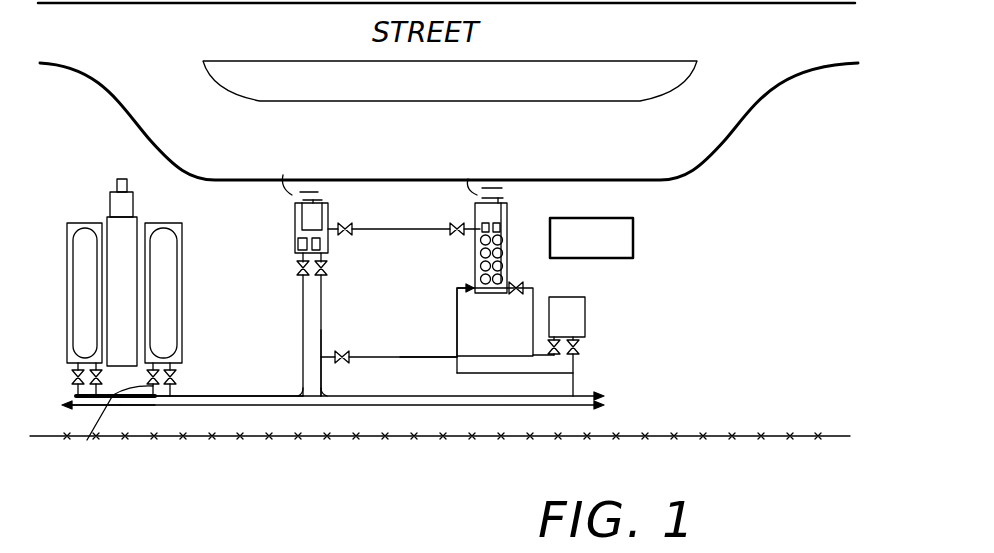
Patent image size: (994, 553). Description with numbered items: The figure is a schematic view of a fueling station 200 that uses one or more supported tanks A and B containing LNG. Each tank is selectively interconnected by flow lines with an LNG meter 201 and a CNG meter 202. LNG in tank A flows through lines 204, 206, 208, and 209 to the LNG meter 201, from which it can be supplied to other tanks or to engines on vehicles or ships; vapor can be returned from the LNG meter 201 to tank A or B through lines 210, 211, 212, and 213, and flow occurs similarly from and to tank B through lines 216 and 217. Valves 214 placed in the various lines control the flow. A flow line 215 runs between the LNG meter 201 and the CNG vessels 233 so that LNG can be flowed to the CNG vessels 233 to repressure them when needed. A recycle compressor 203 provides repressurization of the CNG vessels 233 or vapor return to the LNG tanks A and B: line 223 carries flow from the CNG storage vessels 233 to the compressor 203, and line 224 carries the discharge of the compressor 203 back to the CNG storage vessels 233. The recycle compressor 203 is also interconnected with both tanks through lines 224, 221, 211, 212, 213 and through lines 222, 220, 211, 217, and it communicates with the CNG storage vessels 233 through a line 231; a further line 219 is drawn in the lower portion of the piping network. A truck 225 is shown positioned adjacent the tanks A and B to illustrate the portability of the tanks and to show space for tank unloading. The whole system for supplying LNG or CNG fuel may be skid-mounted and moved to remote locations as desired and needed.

The fueling station 200 is at (363, 410).
The LNG meter 201 is at (330, 207).
The CNG meter 202 is at (507, 213).
The recycle compressor 203 is at (585, 300).
The line 204 is at (84, 405).
The line 206 is at (142, 405).
The line 208 is at (262, 395).
The line 209 is at (302, 305).
The line 210 is at (323, 337).
The line 211 is at (229, 400).
The line 212 is at (120, 405).
The line 213 is at (78, 390).
The valves 214 is at (90, 365).
The flow line 215 is at (405, 233).
The line 216 is at (175, 392).
The line 217 is at (100, 428).
The return line 219 is at (455, 395).
The line 220 is at (323, 370).
The line 221 is at (406, 400).
The line 222 is at (440, 356).
The line 223 is at (533, 330).
The line 224 is at (575, 388).
The truck 225 is at (125, 232).
The line 231 is at (455, 305).
The CNG storage vessels 233 is at (460, 288).
The tank A is at (67, 255).
The tank B is at (182, 260).